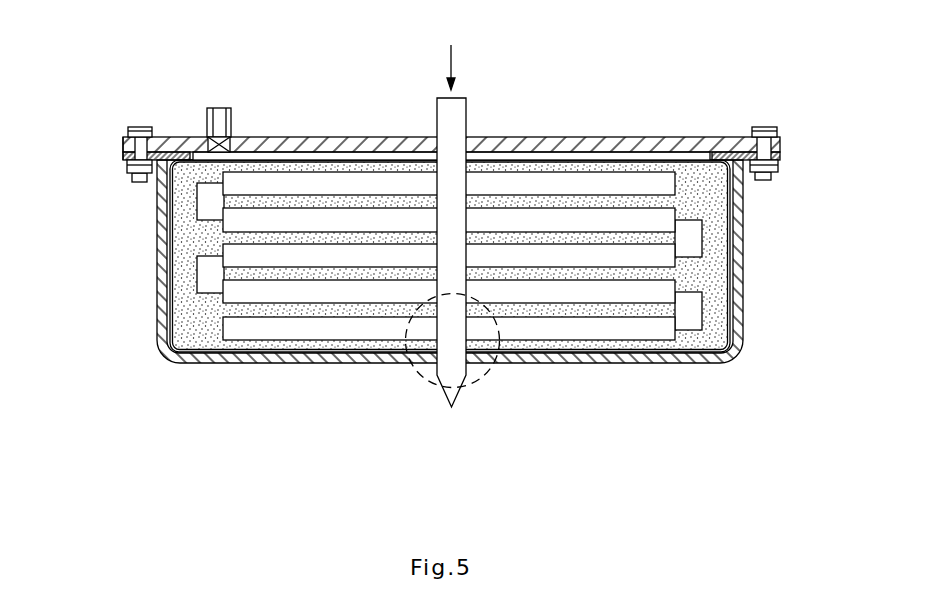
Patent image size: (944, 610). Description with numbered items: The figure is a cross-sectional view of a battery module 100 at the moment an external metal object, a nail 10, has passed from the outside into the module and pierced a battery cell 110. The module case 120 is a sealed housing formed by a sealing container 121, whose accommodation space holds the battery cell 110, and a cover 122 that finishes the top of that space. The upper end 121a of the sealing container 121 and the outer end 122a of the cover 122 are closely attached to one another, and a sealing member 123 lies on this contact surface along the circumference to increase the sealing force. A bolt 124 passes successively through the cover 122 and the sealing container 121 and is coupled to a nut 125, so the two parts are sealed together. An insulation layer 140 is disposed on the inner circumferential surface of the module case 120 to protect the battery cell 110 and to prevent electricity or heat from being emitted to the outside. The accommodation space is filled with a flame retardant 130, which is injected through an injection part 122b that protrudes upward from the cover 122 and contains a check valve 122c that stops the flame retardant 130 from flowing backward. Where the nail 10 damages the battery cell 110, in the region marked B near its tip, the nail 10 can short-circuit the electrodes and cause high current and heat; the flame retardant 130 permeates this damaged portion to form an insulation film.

The battery module 100 is at (668, 38).
The nail 10 is at (457, 118).
The battery cell 110 is at (578, 330).
The module case 120 is at (453, 230).
The sealing container 121 is at (743, 243).
The upper end of the sealing container 121a is at (123, 156).
The cover 122 is at (467, 147).
The outer end of the cover 122a is at (123, 145).
The injection part 122b is at (237, 108).
The check valve 122c is at (233, 140).
The sealing member 123 is at (720, 137).
The bolt 124 is at (777, 131).
The nut 125 is at (778, 166).
The flame retardant 130 is at (715, 277).
The insulation layer 140 is at (358, 158).
The detail region B is at (430, 378).